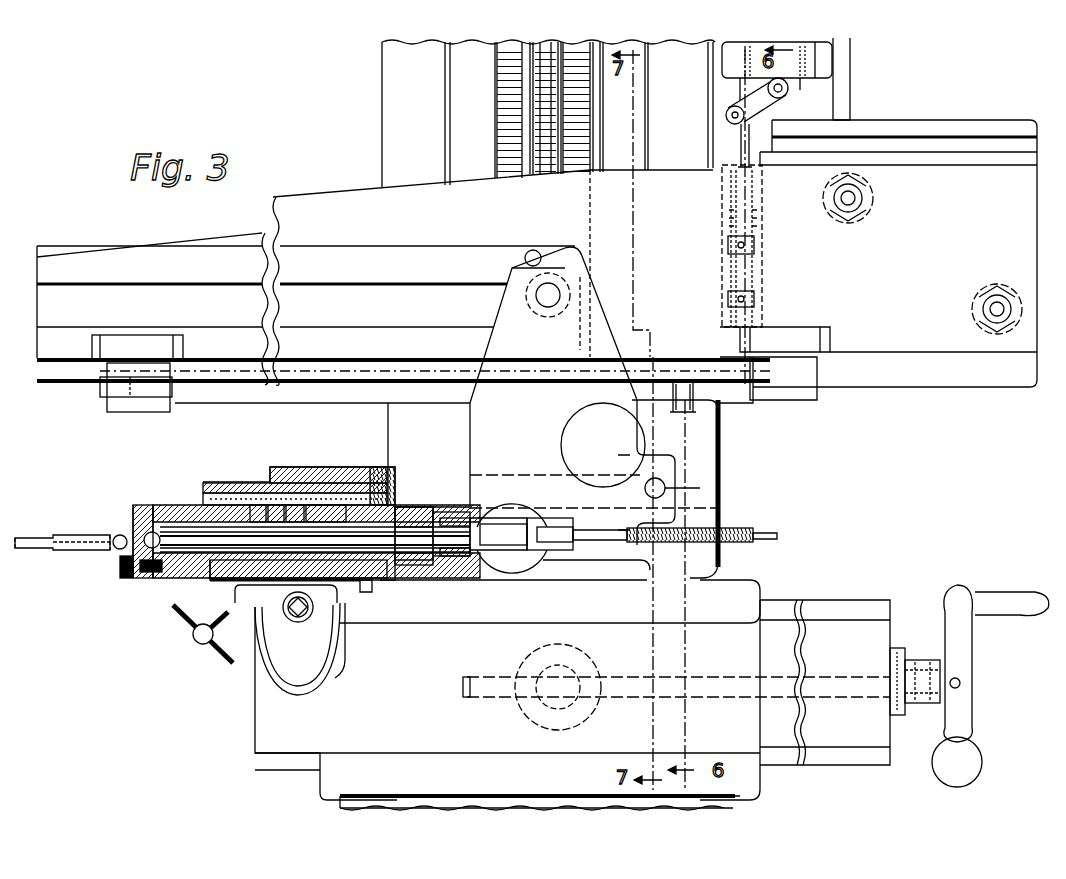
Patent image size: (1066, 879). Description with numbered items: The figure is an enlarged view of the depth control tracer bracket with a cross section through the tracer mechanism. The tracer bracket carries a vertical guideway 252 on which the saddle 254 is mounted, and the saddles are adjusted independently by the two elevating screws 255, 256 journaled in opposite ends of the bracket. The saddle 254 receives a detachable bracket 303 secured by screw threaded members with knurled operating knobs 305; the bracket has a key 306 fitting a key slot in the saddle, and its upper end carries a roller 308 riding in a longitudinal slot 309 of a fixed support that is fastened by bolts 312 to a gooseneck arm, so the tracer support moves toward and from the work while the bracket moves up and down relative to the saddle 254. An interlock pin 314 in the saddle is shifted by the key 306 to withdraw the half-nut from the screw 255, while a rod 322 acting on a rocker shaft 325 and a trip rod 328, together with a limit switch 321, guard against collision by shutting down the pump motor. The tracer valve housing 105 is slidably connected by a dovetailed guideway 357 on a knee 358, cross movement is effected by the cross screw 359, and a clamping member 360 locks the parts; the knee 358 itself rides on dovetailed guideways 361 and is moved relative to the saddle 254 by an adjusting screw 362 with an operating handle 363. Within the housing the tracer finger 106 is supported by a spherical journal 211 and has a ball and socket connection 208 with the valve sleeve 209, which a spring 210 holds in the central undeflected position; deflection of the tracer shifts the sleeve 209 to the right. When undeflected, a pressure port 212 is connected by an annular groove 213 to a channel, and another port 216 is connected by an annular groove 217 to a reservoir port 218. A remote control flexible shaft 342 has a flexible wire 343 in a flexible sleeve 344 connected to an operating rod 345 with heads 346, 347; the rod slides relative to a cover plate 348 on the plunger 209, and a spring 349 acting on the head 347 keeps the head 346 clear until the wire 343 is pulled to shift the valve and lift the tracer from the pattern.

The tracer control valve 105 is at (178, 575).
The tracer finger 106 is at (36, 532).
The ball and socket connection 208 is at (390, 495).
The valve sleeve 209 is at (238, 483).
The spring 210 is at (402, 512).
The spherical journal 211 is at (152, 522).
The pressure port 212 is at (312, 515).
The annular groove 213 is at (338, 500).
The port 216 is at (292, 515).
The annular groove 217 is at (275, 515).
The reservoir port 218 is at (260, 510).
The vertical guideway 252 is at (384, 122).
The saddle 254 is at (757, 588).
The elevating screw 255 is at (603, 128).
The elevating screw 256 is at (497, 103).
The detachable bracket 303 is at (502, 341).
The knurled operating knob 305 is at (568, 421).
The key 306 is at (505, 476).
The roller 308 is at (560, 288).
The slot 309 is at (52, 290).
The bolt 312 is at (862, 198).
The interlock pin 314 is at (700, 487).
The limit switch 321 is at (822, 55).
The rod 322 is at (695, 407).
The rocker shaft 325 is at (207, 393).
The trip rod 328 is at (722, 138).
The remote control flexible shaft 342 is at (737, 527).
The flexible wire 343 is at (770, 531).
The flexible sleeve 344 is at (760, 538).
The operating rod 345 is at (425, 566).
The head 346 is at (370, 594).
The head 347 is at (463, 567).
The cover plate 348 is at (392, 578).
The spring 349 is at (498, 572).
The dovetailed guideway 357 is at (337, 642).
The knee 358 is at (275, 650).
The cross screw 359 is at (322, 674).
The clamping member 360 is at (194, 638).
The dovetailed guideway 361 is at (776, 607).
The adjusting screw 362 is at (843, 682).
The operating handle 363 is at (950, 628).